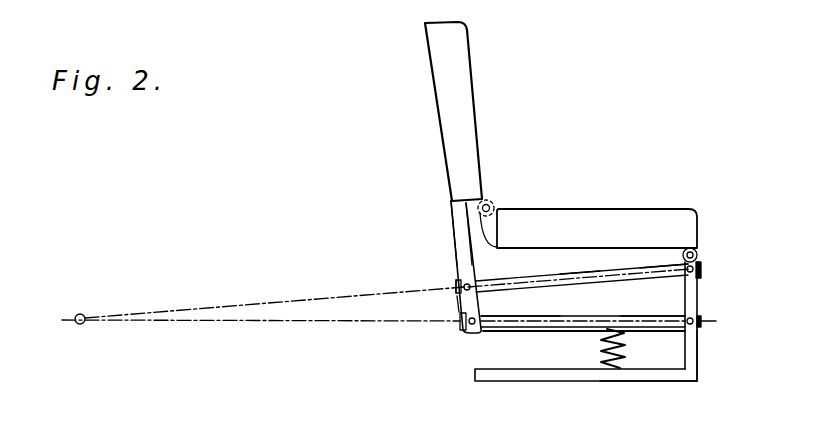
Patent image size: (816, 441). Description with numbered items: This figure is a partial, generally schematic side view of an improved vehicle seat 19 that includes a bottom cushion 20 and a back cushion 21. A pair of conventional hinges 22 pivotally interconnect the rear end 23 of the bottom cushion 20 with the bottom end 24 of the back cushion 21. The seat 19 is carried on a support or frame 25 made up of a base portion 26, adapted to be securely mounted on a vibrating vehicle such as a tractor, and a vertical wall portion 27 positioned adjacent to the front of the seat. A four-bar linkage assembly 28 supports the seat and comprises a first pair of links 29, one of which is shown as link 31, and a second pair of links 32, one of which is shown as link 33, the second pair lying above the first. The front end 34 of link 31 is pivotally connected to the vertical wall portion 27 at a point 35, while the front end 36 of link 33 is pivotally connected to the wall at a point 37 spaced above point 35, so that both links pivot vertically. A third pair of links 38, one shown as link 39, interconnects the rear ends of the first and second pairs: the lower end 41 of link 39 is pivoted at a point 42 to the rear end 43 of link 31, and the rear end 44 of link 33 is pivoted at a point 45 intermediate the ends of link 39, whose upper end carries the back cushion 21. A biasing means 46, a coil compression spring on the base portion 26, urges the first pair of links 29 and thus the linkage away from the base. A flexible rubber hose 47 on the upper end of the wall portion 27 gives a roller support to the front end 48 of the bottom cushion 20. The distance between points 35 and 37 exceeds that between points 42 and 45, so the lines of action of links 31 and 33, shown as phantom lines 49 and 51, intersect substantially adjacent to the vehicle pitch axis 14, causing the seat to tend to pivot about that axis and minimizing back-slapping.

The pitch axis 14 is at (79, 313).
The seat 19 is at (602, 169).
The bottom cushion 20 is at (595, 223).
The back cushion 21 is at (450, 73).
The hinges 22 is at (489, 202).
The rear end of the bottom cushion 23 is at (513, 220).
The bottom end of the back cushion 24 is at (452, 173).
The support or frame 25 is at (568, 386).
The base portion 26 is at (640, 380).
The vertical wall portion 27 is at (697, 357).
The four-bar linkage assembly 28 is at (660, 301).
The first pair of links 29 is at (542, 331).
The link 31 is at (583, 322).
The second pair of links 32 is at (572, 274).
The link 33 is at (587, 270).
The front end of the link 34 is at (665, 328).
The point 35 is at (716, 321).
The front end of the link 36 is at (663, 268).
The point 37 is at (703, 270).
The third pair of links 38 is at (448, 215).
The link 39 is at (455, 231).
The lower end of the link 41 is at (457, 302).
The point 42 is at (462, 326).
The rear end of the link 43 is at (483, 323).
The rear end of the link 44 is at (477, 287).
The point 45 is at (455, 284).
The biasing means 46 is at (604, 347).
The flexible rubber hose 47 is at (699, 251).
The front end of the bottom cushion 48 is at (690, 215).
The phantom line 49 is at (278, 321).
The phantom line 51 is at (308, 298).